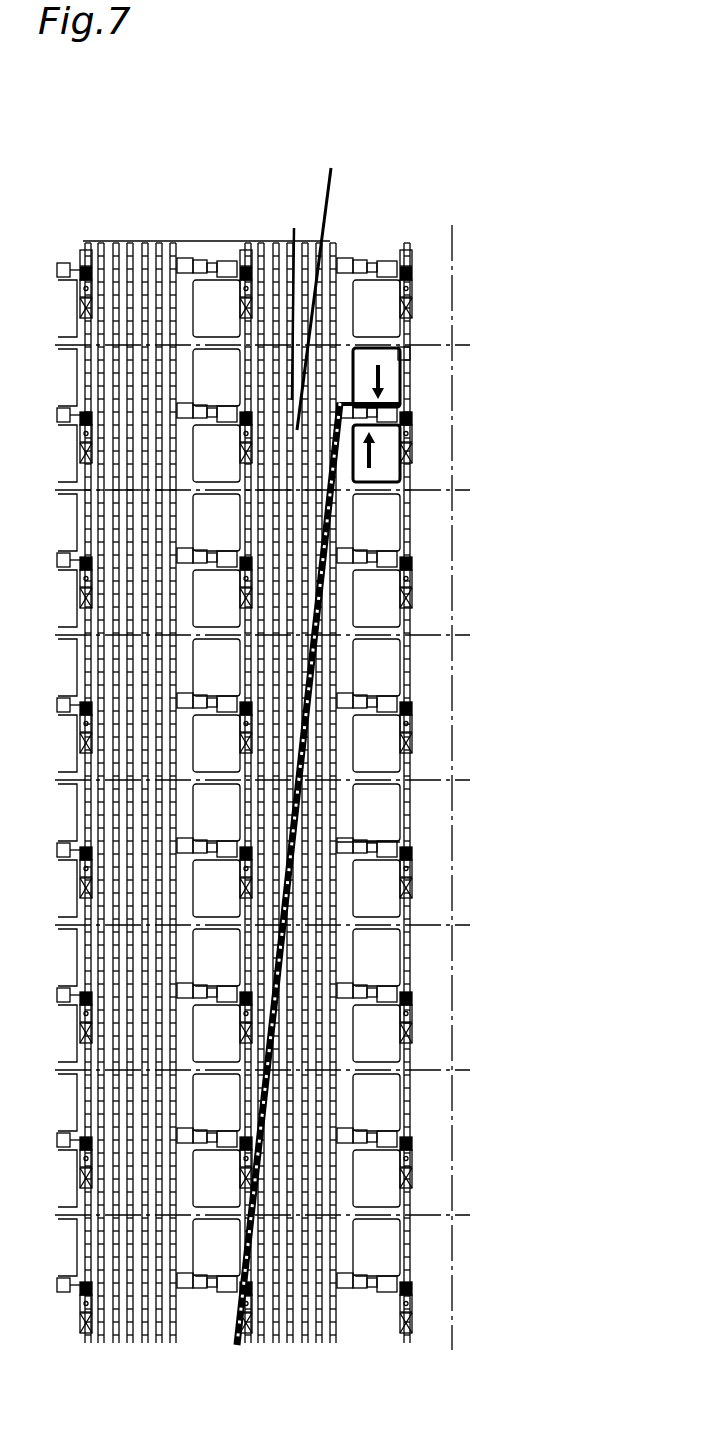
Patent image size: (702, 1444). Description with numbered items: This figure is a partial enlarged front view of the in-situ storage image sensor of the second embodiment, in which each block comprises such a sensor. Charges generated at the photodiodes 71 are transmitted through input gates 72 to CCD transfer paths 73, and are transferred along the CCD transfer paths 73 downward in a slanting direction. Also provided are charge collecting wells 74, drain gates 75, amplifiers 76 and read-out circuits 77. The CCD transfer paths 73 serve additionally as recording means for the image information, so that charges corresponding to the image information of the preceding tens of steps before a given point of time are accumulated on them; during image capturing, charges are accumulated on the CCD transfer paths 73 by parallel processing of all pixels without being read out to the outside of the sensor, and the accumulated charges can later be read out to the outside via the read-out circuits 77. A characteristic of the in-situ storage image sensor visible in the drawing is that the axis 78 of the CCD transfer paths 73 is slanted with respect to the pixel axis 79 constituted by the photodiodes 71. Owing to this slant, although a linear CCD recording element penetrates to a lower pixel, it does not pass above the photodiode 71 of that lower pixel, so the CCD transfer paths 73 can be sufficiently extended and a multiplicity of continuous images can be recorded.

The photodiode 71 is at (393, 360).
The input gate 72 is at (356, 365).
The CCD transfer path 73 is at (320, 640).
The charge collecting well 74 is at (397, 358).
The drain gate 75 is at (408, 412).
The amplifier 76 is at (410, 440).
The read-out circuit 77 is at (402, 470).
The axis of the CCD transfer paths 78 is at (337, 202).
The pixel axis 79 is at (357, 242).